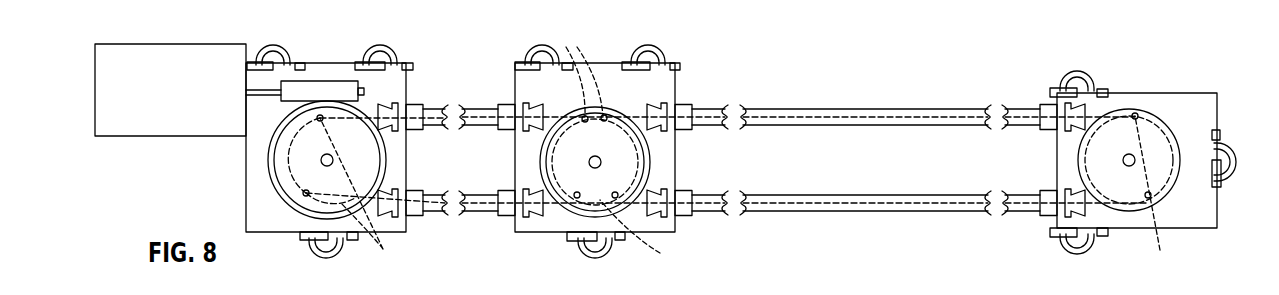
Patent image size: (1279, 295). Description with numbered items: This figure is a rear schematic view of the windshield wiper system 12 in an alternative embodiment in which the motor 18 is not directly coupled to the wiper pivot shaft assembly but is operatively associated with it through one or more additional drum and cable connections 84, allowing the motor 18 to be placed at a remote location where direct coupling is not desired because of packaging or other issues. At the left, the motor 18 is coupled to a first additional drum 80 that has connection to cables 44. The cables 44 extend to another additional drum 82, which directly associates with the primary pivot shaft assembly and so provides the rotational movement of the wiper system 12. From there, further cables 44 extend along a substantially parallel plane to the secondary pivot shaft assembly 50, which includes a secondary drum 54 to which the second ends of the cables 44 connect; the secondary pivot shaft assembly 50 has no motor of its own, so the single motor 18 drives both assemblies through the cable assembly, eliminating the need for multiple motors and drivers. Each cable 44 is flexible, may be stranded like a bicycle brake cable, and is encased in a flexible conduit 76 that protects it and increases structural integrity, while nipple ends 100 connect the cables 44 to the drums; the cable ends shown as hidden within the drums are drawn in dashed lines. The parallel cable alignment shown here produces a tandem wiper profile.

The wiper system 12 is at (772, 70).
The motor 18 is at (313, 88).
The cable 44 is at (490, 195).
The secondary pivot shaft assembly 50 is at (1185, 201).
The secondary drum 54 is at (1128, 112).
The flexible conduit 76 is at (478, 109).
The first additional drum 80 is at (300, 209).
The additional drum 82 is at (580, 208).
The drum and cable connections 84 is at (395, 193).
The nipple ends 100 is at (753, 148).